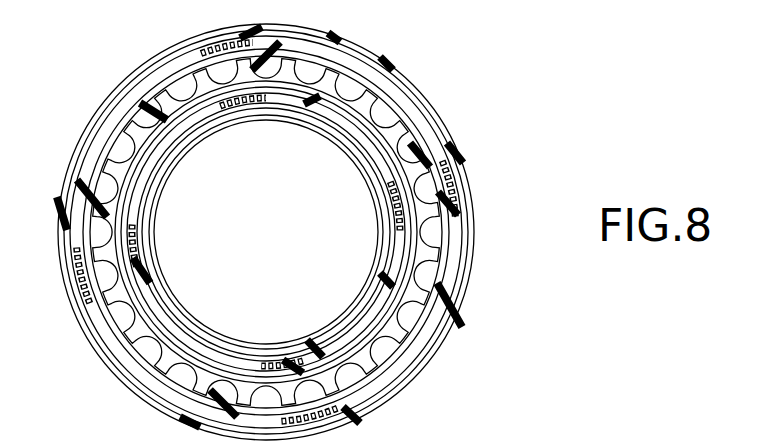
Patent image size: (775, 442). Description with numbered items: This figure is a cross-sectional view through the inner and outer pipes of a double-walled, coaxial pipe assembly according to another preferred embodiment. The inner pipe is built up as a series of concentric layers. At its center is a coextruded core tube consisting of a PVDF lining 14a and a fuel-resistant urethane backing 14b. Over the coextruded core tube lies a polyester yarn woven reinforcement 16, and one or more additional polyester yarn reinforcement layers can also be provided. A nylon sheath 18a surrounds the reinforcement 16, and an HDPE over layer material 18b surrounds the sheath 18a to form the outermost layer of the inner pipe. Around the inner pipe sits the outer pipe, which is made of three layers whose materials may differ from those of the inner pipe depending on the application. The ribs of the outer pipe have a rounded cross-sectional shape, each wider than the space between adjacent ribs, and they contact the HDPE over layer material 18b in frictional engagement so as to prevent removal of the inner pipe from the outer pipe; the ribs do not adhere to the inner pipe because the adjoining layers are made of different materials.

The PVDF lining 14a is at (155, 267).
The fuel-resistant urethane backing 14b is at (162, 293).
The polyester yarn woven reinforcement 16 is at (147, 228).
The nylon sheath 18a is at (125, 203).
The HDPE over layer material 18b is at (120, 283).